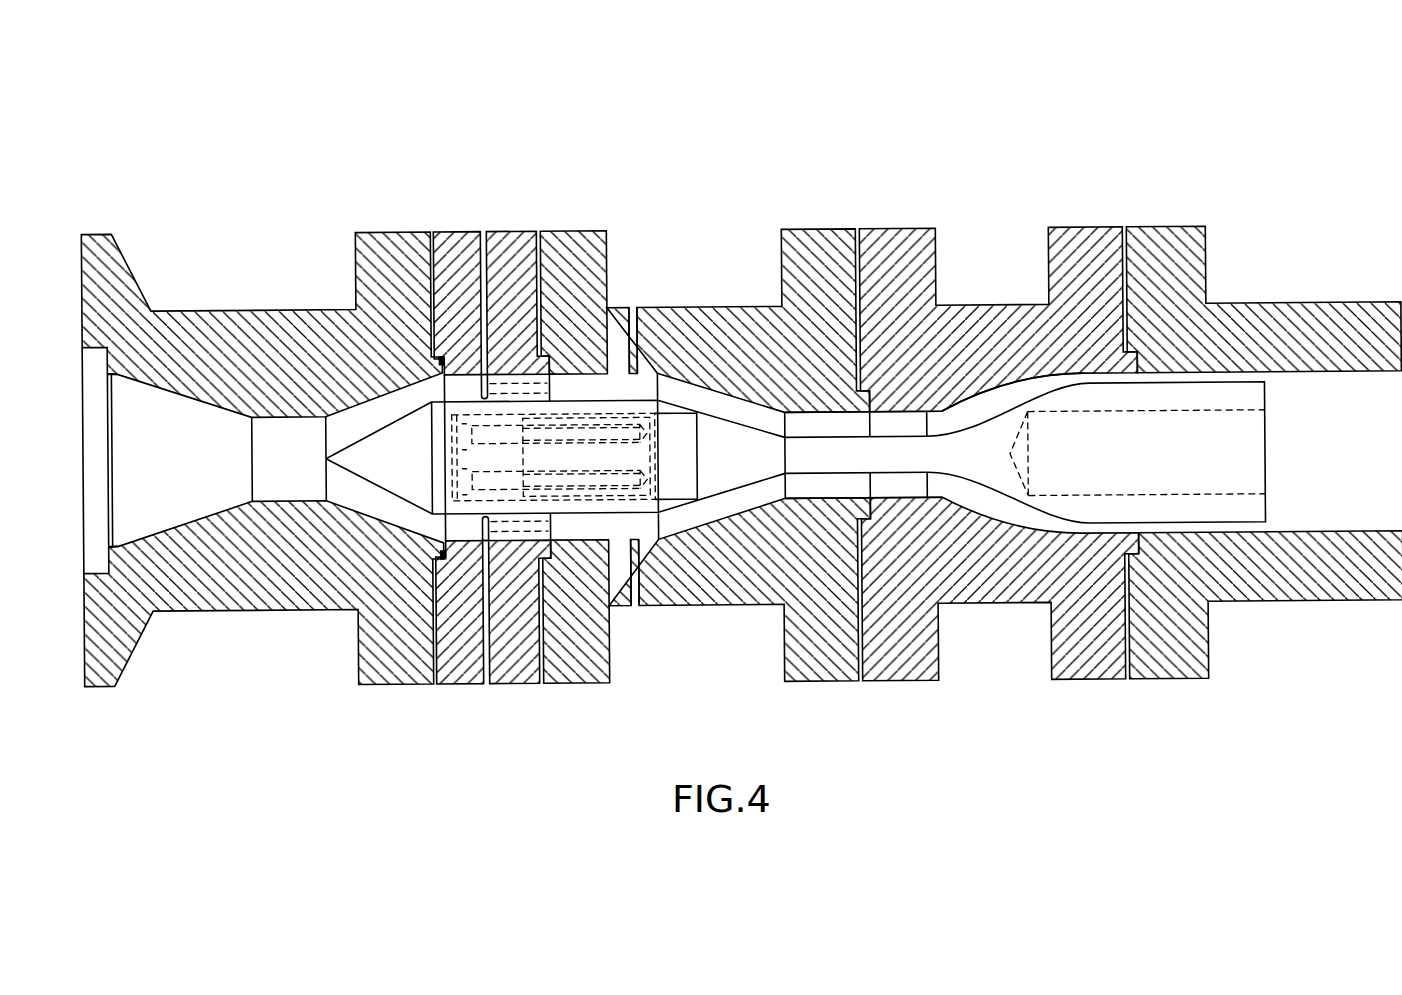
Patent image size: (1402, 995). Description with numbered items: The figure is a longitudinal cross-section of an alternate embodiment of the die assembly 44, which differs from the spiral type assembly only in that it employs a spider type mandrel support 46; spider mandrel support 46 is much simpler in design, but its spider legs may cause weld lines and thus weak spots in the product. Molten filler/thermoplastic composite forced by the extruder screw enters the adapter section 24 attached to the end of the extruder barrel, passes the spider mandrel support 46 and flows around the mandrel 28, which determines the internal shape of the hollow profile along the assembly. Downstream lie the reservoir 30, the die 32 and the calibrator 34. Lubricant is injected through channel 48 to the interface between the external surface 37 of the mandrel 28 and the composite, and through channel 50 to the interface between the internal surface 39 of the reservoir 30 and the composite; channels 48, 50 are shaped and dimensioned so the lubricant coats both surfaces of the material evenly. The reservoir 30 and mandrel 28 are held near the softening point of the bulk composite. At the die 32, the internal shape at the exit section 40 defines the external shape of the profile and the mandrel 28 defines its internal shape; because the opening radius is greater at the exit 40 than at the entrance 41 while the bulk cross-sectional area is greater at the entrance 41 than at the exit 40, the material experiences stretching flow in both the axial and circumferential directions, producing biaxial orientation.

The adapter section 24 is at (250, 204).
The mandrel 28 is at (1152, 404).
The reservoir 30 is at (809, 192).
The die 32 is at (969, 195).
The calibrator 34 is at (1231, 195).
The external surface of the mandrel 37 is at (807, 474).
The internal surface of the reservoir 39 is at (833, 499).
The exit section of the die 40 is at (1082, 373).
The entrance of the die 41 is at (944, 411).
The die assembly 44 is at (693, 100).
The spider mandrel support 46 is at (446, 182).
The channel 48 is at (488, 230).
The channel 50 is at (635, 308).